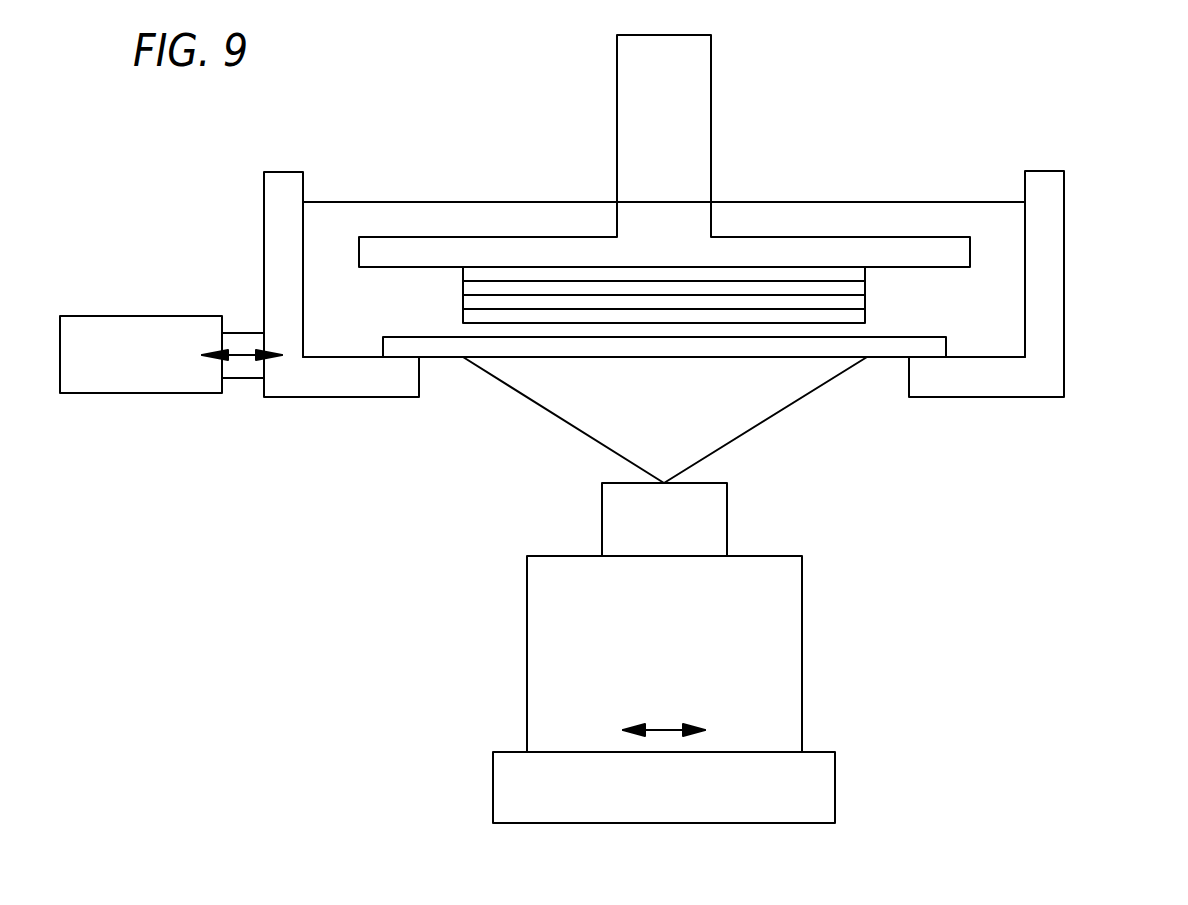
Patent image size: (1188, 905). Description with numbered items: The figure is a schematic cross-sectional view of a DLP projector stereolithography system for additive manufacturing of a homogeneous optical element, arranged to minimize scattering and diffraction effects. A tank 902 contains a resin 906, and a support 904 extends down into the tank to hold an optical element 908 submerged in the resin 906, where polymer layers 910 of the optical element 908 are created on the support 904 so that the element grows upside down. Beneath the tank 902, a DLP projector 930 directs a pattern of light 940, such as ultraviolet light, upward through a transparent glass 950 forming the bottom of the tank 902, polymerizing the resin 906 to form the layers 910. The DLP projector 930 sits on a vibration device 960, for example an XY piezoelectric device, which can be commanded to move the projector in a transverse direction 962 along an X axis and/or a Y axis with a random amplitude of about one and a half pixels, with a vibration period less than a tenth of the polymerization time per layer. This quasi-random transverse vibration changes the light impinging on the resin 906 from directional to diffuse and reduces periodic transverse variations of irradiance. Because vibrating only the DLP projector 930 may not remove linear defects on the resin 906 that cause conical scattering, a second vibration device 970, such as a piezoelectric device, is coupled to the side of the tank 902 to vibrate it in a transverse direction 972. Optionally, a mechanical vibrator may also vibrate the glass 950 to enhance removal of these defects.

The tank 902 is at (1064, 282).
The support 904 is at (711, 89).
The resin 906 is at (997, 223).
The optical element 908 is at (463, 295).
The layers 910 is at (865, 275).
The DLP projector 930 is at (802, 655).
The pattern of light 940 is at (593, 440).
The glass 950 is at (893, 357).
The vibration device 960 is at (835, 787).
The transverse direction 962 is at (664, 728).
The vibration device 970 is at (140, 393).
The transverse direction 972 is at (243, 357).